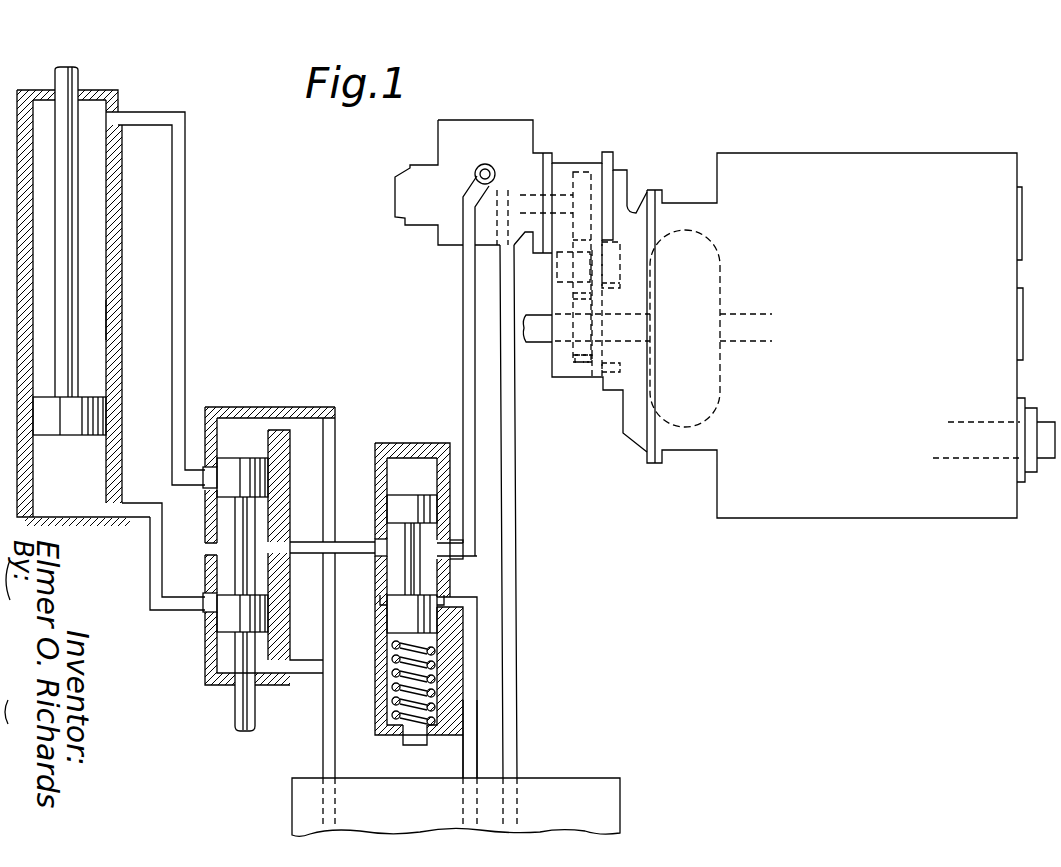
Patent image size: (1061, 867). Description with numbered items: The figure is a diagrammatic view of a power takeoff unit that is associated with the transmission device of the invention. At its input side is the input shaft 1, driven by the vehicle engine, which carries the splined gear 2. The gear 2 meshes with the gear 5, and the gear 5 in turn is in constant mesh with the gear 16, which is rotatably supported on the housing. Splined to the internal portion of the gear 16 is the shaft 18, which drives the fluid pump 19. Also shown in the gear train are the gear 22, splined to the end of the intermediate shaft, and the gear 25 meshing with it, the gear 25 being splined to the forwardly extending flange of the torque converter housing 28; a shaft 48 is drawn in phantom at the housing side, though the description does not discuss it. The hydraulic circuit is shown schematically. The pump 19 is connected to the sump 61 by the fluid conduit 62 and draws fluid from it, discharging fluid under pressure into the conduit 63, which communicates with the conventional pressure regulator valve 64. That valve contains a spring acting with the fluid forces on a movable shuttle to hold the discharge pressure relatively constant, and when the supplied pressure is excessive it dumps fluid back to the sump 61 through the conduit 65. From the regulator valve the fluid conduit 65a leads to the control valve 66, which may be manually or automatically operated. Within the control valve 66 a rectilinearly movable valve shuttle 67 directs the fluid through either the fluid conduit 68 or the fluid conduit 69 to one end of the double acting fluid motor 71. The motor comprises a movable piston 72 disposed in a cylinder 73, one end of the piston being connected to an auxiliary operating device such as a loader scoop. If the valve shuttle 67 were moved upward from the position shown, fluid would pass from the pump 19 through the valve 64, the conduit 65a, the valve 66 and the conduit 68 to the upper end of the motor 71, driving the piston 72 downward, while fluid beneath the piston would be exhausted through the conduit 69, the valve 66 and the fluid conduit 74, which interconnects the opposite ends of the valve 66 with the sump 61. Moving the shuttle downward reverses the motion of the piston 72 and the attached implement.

The input shaft 1 is at (540, 334).
The gear 2 is at (582, 366).
The gear 5 is at (603, 242).
The gear 16 is at (581, 170).
The shaft 18 is at (535, 195).
The fluid pump 19 is at (436, 141).
The gear 22 is at (619, 278).
The gear 25 is at (617, 358).
The torque converter housing 28 is at (722, 258).
The motor shaft 48 is at (752, 342).
The sump 61 is at (573, 778).
The fluid conduit 62 is at (512, 570).
The conduit 63 is at (467, 312).
The pressure regulator valve 64 is at (420, 444).
The conduit 65 is at (472, 758).
The fluid conduit 65a is at (353, 541).
The control valve 66 is at (258, 404).
The valve shuttle 67 is at (256, 492).
The fluid conduit 68 is at (186, 262).
The fluid conduit 69 is at (162, 572).
The double acting fluid motor 71 is at (120, 102).
The piston 72 is at (112, 420).
The cylinder 73 is at (104, 318).
The fluid conduit 74 is at (336, 762).